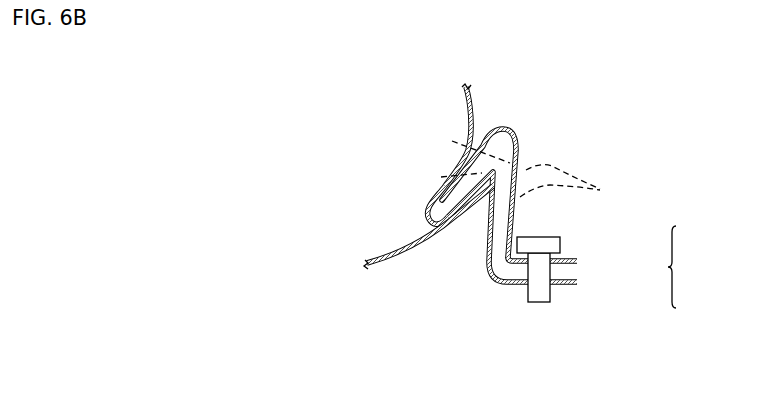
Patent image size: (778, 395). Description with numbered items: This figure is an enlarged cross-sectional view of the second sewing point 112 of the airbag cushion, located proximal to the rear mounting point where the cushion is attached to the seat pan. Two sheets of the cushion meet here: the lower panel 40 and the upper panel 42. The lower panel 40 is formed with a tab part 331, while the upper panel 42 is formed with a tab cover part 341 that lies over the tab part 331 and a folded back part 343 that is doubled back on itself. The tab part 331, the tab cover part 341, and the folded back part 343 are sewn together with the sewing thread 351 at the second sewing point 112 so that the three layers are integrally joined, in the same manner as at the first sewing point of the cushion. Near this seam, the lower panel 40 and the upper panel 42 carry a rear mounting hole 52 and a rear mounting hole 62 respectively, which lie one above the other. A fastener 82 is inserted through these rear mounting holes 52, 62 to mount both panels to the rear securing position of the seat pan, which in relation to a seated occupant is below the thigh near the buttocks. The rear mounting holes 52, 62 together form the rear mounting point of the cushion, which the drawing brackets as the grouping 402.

The upper panel 42 is at (477, 101).
The second sewing point 112 is at (575, 90).
The tab cover part 341 is at (521, 139).
The folded back part 343 is at (441, 190).
The sewing thread 351 is at (544, 173).
The tab part 331 is at (497, 207).
The rear mounting hole 62 is at (565, 259).
The rear mounting hole 52 is at (575, 287).
The bracket assembly 402 is at (695, 267).
The fastener 82 is at (540, 291).
The lower panel 40 is at (395, 265).